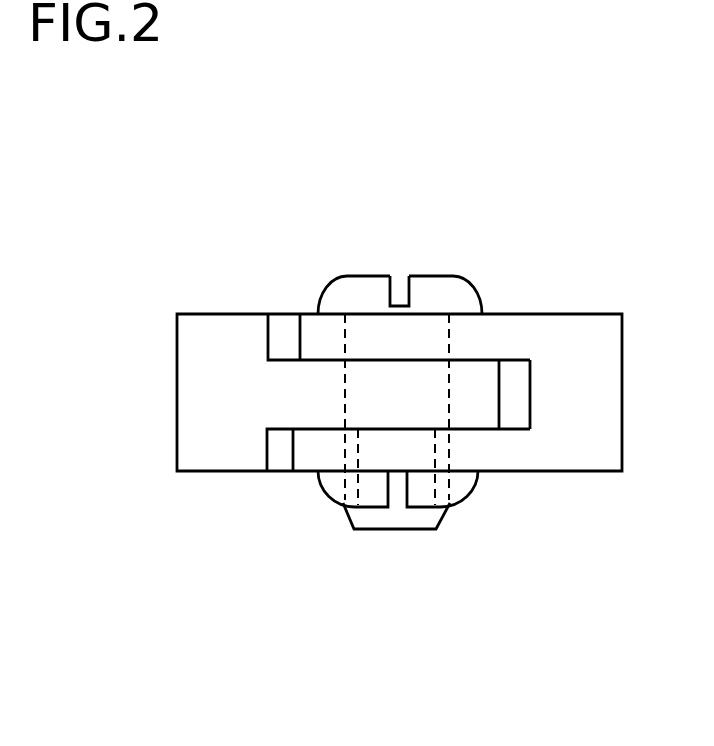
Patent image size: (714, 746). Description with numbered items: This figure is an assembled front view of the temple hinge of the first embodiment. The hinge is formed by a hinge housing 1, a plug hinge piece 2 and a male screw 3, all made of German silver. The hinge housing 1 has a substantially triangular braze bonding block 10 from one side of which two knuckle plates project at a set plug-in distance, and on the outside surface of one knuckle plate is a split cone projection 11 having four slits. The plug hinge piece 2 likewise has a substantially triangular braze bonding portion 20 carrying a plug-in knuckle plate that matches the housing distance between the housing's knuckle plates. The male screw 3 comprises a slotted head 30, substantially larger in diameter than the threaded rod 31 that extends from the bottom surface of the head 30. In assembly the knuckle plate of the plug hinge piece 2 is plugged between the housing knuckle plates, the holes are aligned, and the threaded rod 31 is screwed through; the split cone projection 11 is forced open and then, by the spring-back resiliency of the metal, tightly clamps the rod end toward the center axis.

The hinge housing 1 is at (551, 314).
The braze bonding block 10 is at (590, 467).
The plug hinge piece 2 is at (232, 313).
The braze bonding portion 20 is at (226, 464).
The male screw 3 is at (328, 276).
The slotted head 30 is at (420, 283).
The split cone projection 11 is at (332, 500).
The threaded rod 31 is at (385, 530).